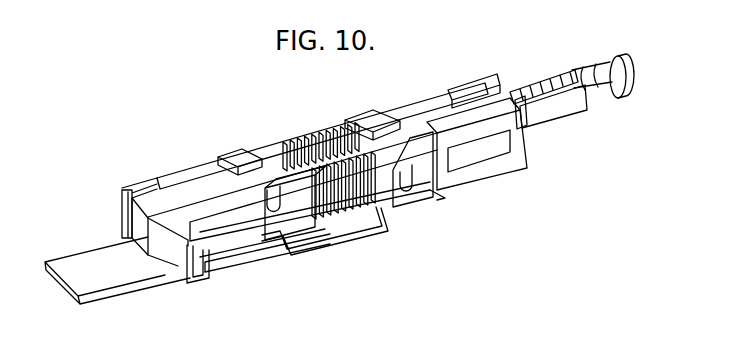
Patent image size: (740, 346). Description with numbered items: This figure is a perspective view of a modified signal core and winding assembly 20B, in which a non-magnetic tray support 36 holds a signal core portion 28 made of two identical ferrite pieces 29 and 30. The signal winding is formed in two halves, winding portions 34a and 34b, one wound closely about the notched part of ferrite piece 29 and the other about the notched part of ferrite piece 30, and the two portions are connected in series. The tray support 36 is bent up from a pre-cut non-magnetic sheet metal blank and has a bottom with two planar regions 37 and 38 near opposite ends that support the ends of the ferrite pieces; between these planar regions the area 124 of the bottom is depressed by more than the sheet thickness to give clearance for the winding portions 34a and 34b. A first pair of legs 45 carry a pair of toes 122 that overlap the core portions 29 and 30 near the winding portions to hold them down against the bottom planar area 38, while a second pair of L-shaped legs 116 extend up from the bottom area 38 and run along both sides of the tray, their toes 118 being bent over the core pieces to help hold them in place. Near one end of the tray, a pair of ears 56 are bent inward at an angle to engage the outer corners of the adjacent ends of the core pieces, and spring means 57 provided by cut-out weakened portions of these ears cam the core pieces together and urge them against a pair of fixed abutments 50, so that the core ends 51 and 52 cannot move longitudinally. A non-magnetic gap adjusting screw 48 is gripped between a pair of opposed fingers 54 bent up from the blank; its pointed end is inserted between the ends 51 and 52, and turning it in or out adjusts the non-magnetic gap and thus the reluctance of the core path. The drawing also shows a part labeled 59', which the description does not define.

The contact plate 59' is at (100, 266).
The ears 56 is at (122, 210).
The signal core portion 28 is at (177, 182).
The ferrite piece 29 is at (160, 205).
The L-shaped legs 116 is at (187, 170).
The ferrite piece 30 is at (204, 205).
The toes 118 is at (283, 190).
The signal winding portion 34a is at (297, 152).
The signal winding portion 34b is at (347, 207).
The toes 122 is at (400, 167).
The depressed area 124 is at (327, 237).
The planar region 37 is at (243, 258).
The spring means 57 is at (198, 258).
The tray support 36 is at (430, 215).
The planar region 38 is at (446, 190).
The legs 45 is at (477, 163).
The end of core piece 51 is at (478, 98).
The fixed abutments 50 is at (485, 95).
The fingers 54 is at (560, 98).
The end of core piece 52 is at (525, 123).
The screw 48 is at (630, 82).
The modified signal core and winding assembly 20B is at (523, 183).